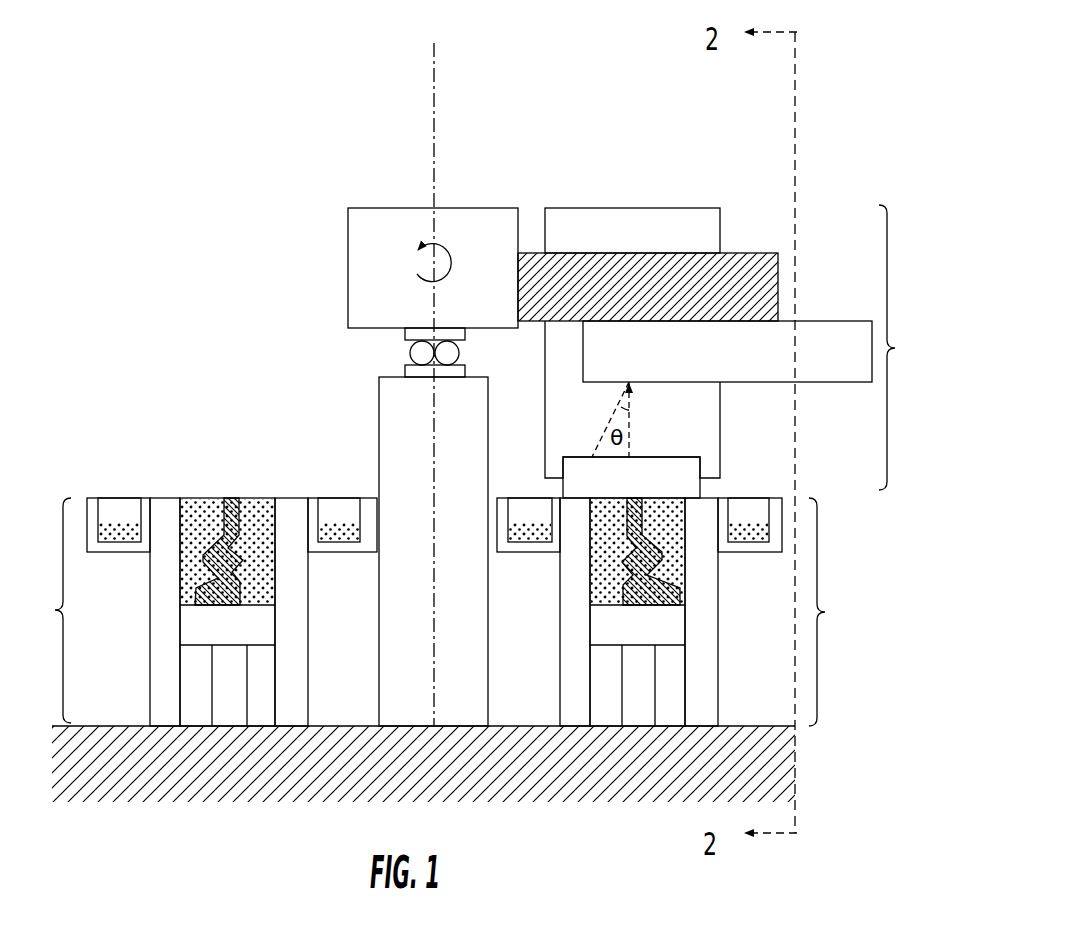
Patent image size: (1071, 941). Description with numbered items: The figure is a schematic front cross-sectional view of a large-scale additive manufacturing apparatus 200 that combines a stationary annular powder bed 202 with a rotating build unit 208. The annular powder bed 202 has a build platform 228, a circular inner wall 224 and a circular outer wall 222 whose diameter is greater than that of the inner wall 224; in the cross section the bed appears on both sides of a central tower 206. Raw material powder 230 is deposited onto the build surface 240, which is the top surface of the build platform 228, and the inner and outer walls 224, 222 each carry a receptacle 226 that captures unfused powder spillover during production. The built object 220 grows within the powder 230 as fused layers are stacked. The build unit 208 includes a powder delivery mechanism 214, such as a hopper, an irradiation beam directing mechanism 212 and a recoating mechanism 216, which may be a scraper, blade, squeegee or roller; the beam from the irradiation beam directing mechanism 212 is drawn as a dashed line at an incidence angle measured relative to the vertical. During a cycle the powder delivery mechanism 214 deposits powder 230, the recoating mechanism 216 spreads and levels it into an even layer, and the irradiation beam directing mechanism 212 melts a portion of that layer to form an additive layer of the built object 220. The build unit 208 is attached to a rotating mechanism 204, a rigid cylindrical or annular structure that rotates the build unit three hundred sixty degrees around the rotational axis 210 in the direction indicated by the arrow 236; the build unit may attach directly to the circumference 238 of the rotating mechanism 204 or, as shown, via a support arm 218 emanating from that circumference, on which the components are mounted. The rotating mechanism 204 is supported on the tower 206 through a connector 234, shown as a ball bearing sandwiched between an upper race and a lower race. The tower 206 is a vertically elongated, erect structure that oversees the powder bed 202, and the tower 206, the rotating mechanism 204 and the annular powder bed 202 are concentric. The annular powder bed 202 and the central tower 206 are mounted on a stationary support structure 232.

The large-scale additive manufacturing apparatus 200 is at (250, 108).
The annular powder bed 202 is at (446, 612).
The rotating mechanism 204 is at (348, 270).
The tower 206 is at (379, 400).
The build unit 208 is at (908, 347).
The rotational axis 210 is at (432, 86).
The irradiation beam directing mechanism 212 is at (835, 321).
The powder delivery mechanism 214 is at (679, 207).
The recoating mechanism 216 is at (683, 457).
The support arm 218 is at (776, 253).
The built object 220 is at (230, 498).
The circular outer wall 222 is at (150, 678).
The circular inner wall 224 is at (308, 690).
The receptacle 226 is at (110, 505).
The build platform 228 is at (195, 620).
The raw material powder 230 is at (200, 505).
The stationary support structure 232 is at (85, 805).
The connector 234 is at (408, 352).
The arrow 236 is at (452, 270).
The circumference 238 is at (348, 230).
The build surface 240 is at (250, 597).